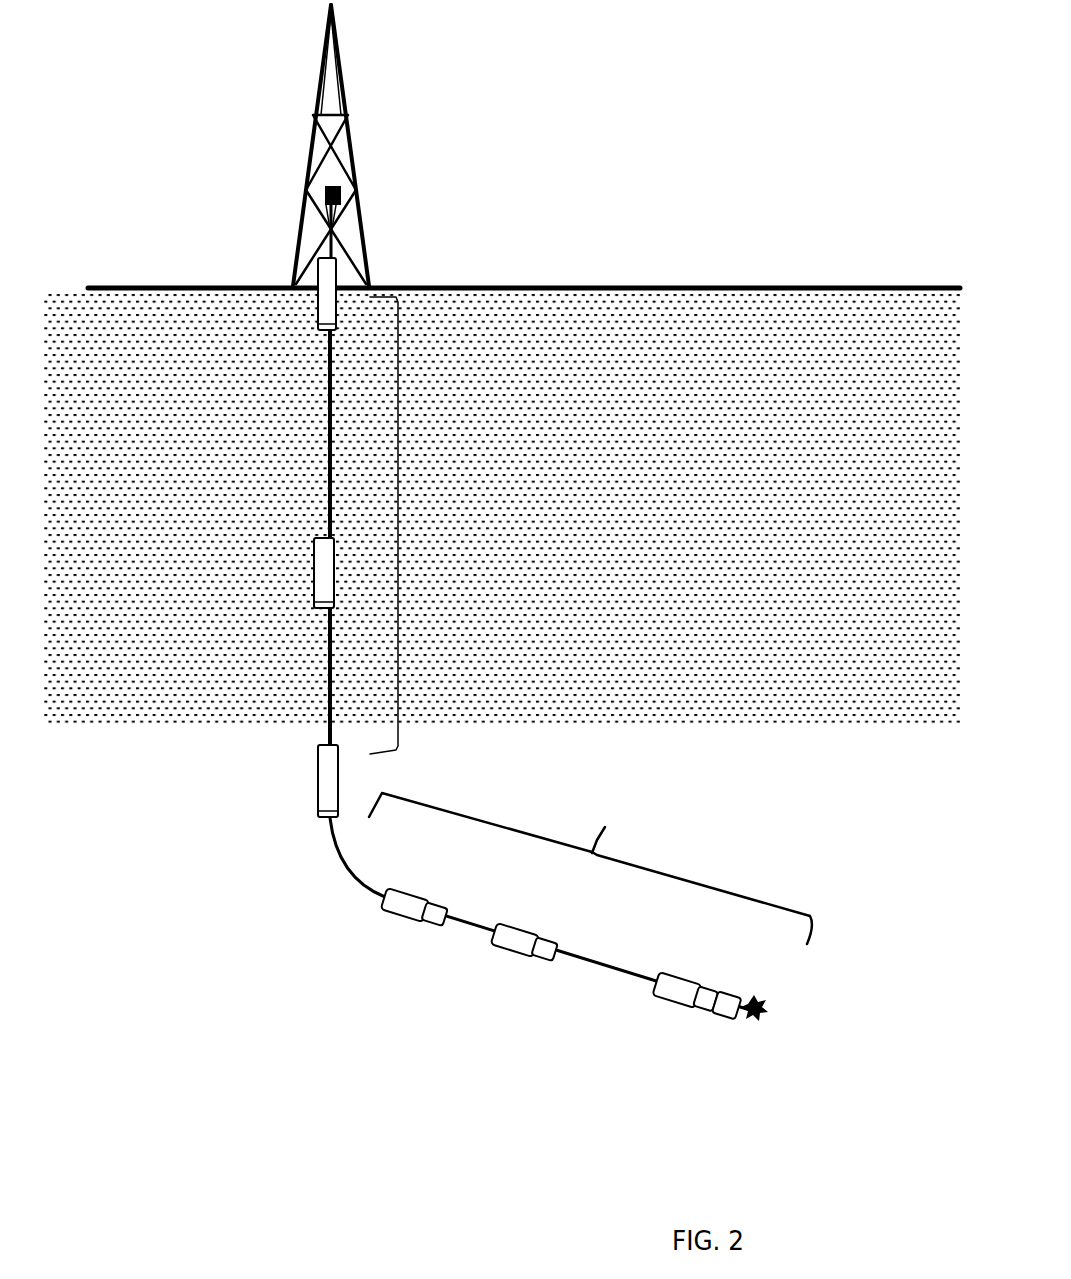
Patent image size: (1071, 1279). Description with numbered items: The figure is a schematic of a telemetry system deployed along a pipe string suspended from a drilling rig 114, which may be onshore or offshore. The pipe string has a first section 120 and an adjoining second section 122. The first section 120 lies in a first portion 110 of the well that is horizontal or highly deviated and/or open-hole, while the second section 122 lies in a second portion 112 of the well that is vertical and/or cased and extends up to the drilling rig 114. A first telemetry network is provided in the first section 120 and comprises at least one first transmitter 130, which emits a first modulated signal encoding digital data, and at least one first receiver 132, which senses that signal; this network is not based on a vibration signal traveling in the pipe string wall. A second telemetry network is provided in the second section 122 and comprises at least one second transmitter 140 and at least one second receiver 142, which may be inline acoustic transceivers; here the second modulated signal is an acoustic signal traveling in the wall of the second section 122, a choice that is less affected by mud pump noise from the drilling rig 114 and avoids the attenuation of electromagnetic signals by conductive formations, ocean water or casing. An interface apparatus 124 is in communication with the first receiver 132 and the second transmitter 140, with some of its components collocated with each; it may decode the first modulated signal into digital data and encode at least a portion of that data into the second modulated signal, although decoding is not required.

The first portion of the well 110 is at (590, 860).
The second portion of the well 112 is at (398, 522).
The drilling rig 114 is at (343, 183).
The first section of the pipe string 120 is at (600, 967).
The second section of the pipe string 122 is at (328, 497).
The interface apparatus 124 is at (403, 901).
The first transmitter 130 is at (680, 993).
The first receiver 132 is at (397, 897).
The second transmitter 140 is at (322, 780).
The second receiver 142 is at (328, 298).